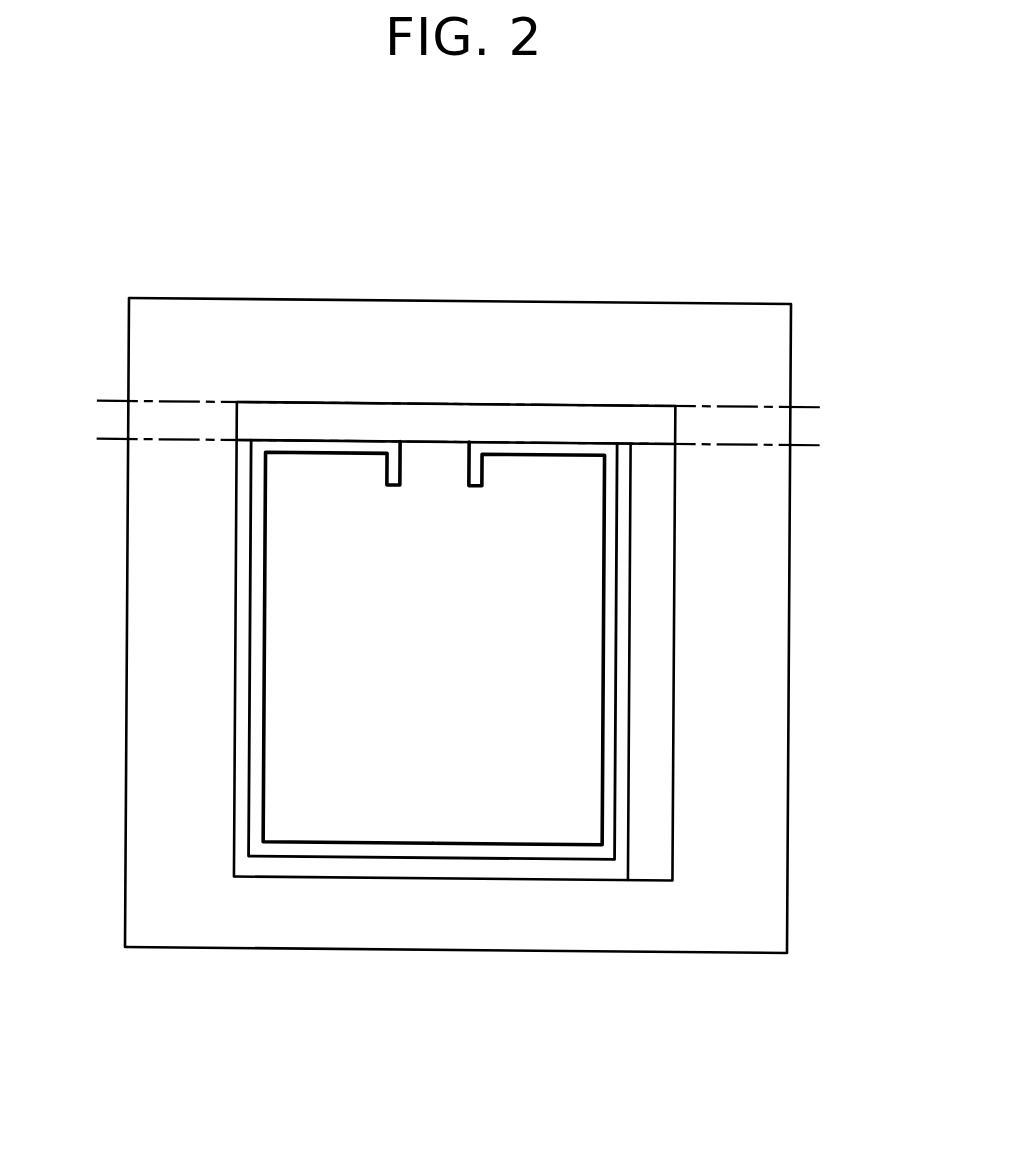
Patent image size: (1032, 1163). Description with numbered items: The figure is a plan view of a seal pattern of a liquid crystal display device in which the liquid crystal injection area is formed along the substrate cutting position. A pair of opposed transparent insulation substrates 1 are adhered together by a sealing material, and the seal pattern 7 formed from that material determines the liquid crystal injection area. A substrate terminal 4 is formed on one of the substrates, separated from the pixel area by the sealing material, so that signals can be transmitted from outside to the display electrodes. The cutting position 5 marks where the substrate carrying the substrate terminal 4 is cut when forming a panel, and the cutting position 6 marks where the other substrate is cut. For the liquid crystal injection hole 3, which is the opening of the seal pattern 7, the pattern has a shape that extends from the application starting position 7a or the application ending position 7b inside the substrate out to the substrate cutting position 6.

The transparent insulation substrates 1 is at (733, 607).
The liquid crystal injection hole 3 is at (433, 468).
The substrate terminal 4 is at (562, 423).
The cutting position 5 is at (807, 408).
The cutting position 6 is at (808, 447).
The seal pattern 7 is at (612, 552).
The application starting position 7a is at (394, 478).
The application ending position 7b is at (476, 478).